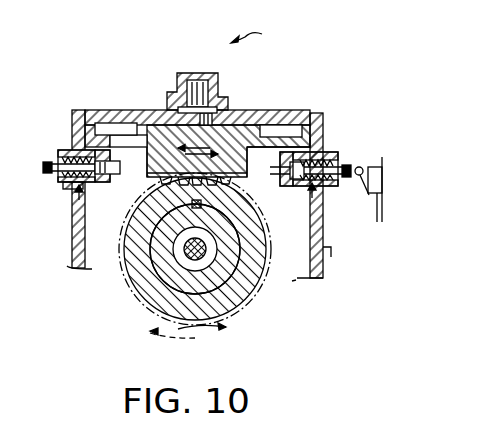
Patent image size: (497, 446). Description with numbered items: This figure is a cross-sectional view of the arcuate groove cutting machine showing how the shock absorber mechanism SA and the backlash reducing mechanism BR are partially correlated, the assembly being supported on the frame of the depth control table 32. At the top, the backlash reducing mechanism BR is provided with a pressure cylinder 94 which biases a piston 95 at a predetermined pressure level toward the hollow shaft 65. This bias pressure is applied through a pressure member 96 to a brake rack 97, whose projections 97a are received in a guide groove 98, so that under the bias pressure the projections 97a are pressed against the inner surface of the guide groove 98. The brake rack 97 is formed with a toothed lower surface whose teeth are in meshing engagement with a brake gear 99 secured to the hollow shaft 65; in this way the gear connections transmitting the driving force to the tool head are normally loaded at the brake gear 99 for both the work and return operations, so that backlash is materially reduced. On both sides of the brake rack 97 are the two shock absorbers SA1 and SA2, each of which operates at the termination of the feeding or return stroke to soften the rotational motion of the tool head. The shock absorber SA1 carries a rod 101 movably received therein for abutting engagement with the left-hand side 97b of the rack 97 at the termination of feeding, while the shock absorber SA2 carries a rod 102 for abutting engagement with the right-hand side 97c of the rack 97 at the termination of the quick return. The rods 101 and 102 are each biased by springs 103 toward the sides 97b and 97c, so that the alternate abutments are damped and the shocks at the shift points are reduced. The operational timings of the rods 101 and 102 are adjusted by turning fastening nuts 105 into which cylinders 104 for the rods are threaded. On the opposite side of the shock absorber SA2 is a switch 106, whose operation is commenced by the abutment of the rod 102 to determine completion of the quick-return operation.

The depth control table 32 is at (322, 197).
The hollow shaft 65 is at (218, 272).
The pressure cylinder 94 is at (180, 75).
The piston 95 is at (212, 93).
The pressure member 96 is at (228, 112).
The brake rack 97 is at (165, 125).
The projections 97a is at (138, 128).
The left-hand side 97b is at (147, 162).
The right-hand side 97c is at (250, 165).
The guide groove 98 is at (272, 126).
The brake gear 99 is at (253, 267).
The rod 101 is at (105, 158).
The rod 102 is at (298, 153).
The springs 103 is at (57, 182).
The cylinders 104 is at (57, 158).
The fastening nuts 105 is at (68, 150).
The switch 106 is at (363, 200).
The shock absorber SA1 is at (187, 164).
The shock absorber SA2 is at (325, 145).
The backlash reducing mechanism BR is at (295, 33).
The shock absorber mechanism SA is at (293, 65).